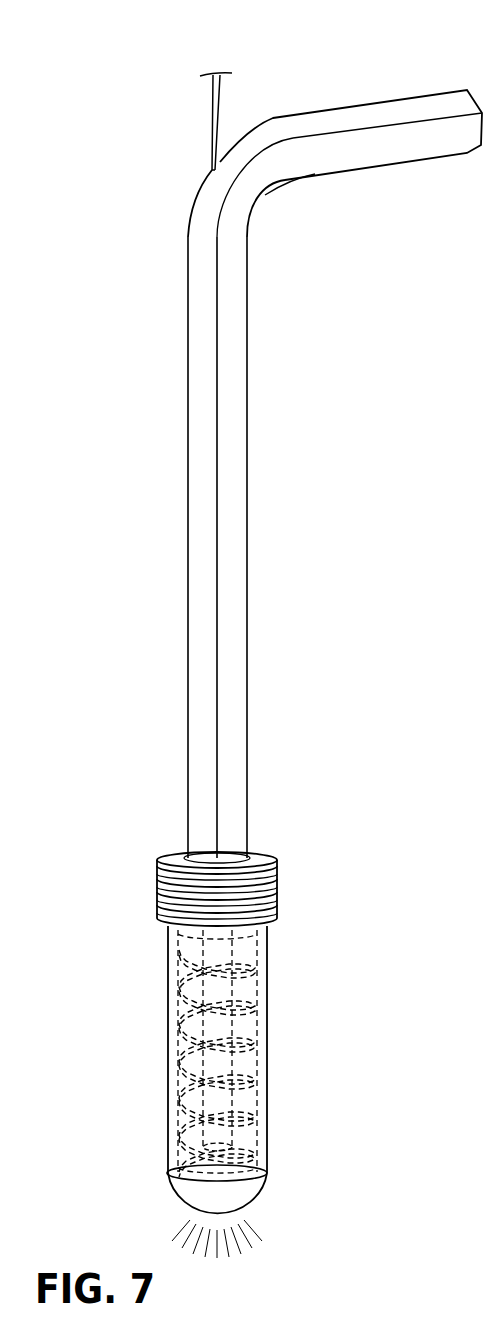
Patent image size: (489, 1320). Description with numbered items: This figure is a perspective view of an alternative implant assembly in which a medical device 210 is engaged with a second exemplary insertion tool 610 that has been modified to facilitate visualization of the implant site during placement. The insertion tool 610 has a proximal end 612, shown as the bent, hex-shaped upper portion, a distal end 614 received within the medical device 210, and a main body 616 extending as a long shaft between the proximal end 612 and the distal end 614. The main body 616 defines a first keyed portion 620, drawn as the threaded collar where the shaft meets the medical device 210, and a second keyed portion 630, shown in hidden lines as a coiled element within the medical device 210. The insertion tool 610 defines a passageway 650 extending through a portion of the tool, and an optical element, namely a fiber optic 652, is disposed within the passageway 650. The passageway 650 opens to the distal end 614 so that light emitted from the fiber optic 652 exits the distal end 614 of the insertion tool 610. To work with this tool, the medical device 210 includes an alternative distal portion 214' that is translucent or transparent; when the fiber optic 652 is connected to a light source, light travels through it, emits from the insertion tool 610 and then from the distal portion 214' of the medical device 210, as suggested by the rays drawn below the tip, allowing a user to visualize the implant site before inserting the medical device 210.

The proximal end 612 is at (407, 97).
The insertion tool 610 is at (172, 335).
The main body 616 is at (188, 540).
The passageway 650 is at (212, 168).
The fiber optic 652 is at (219, 100).
The first keyed portion 620 is at (265, 807).
The medical device 210 is at (158, 978).
The second keyed portion 630 is at (247, 1013).
The distal end 614 is at (203, 1120).
The distal portion 214' is at (250, 1215).